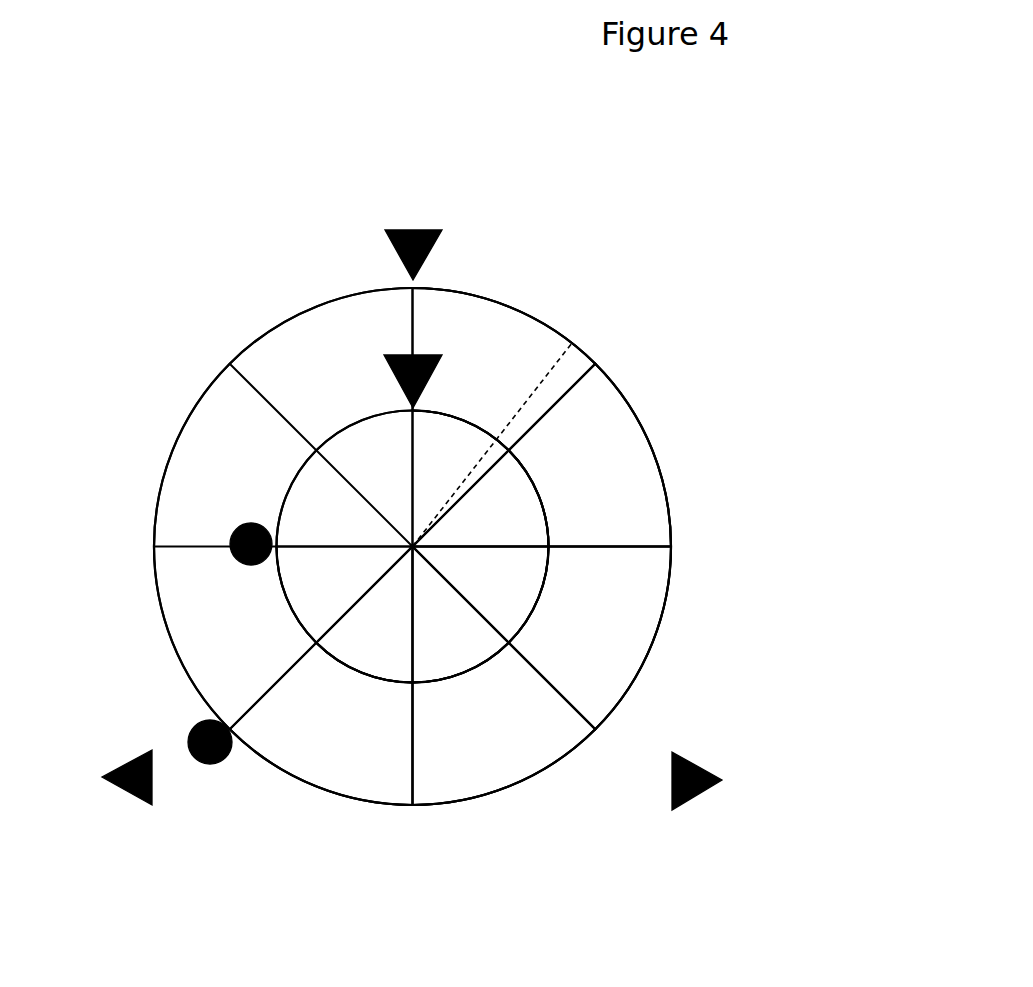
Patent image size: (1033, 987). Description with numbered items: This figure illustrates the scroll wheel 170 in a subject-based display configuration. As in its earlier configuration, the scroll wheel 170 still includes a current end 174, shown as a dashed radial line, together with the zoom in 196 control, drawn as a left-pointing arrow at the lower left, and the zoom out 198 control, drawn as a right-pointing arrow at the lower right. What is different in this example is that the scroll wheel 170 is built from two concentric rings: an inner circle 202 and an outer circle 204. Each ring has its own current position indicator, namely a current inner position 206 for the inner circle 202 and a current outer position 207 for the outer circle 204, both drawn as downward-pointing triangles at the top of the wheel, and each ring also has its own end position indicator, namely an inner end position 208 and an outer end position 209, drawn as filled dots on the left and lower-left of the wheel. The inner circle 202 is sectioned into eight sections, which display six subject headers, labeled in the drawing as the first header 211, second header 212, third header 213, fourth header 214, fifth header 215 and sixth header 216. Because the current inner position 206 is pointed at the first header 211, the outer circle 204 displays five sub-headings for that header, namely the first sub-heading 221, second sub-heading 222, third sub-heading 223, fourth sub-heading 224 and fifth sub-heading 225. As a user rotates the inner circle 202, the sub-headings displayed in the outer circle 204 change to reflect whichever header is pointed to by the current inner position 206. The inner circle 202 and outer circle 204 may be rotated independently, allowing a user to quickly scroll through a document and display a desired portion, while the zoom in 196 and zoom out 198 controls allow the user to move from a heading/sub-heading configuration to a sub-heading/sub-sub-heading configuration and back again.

The scroll wheel 170 is at (373, 124).
The current end 174 is at (582, 338).
The zoom in 196 is at (102, 777).
The zoom out 198 is at (673, 810).
The inner circle 202 is at (295, 615).
The outer circle 204 is at (668, 495).
The current inner position 206 is at (412, 354).
The current outer position 207 is at (415, 228).
The inner end position 208 is at (253, 521).
The outer end position 209 is at (227, 760).
The S_1 211 is at (461, 478).
The S_2 212 is at (481, 498).
The S_3 213 is at (481, 595).
The S_4 214 is at (461, 615).
The S_5 215 is at (364, 615).
The S_6 216 is at (345, 595).
The S_1.1 221 is at (504, 369).
The S_1.2 222 is at (590, 455).
The S_1.3 223 is at (590, 638).
The S_1.4 224 is at (504, 724).
The S_1.5 225 is at (321, 724).